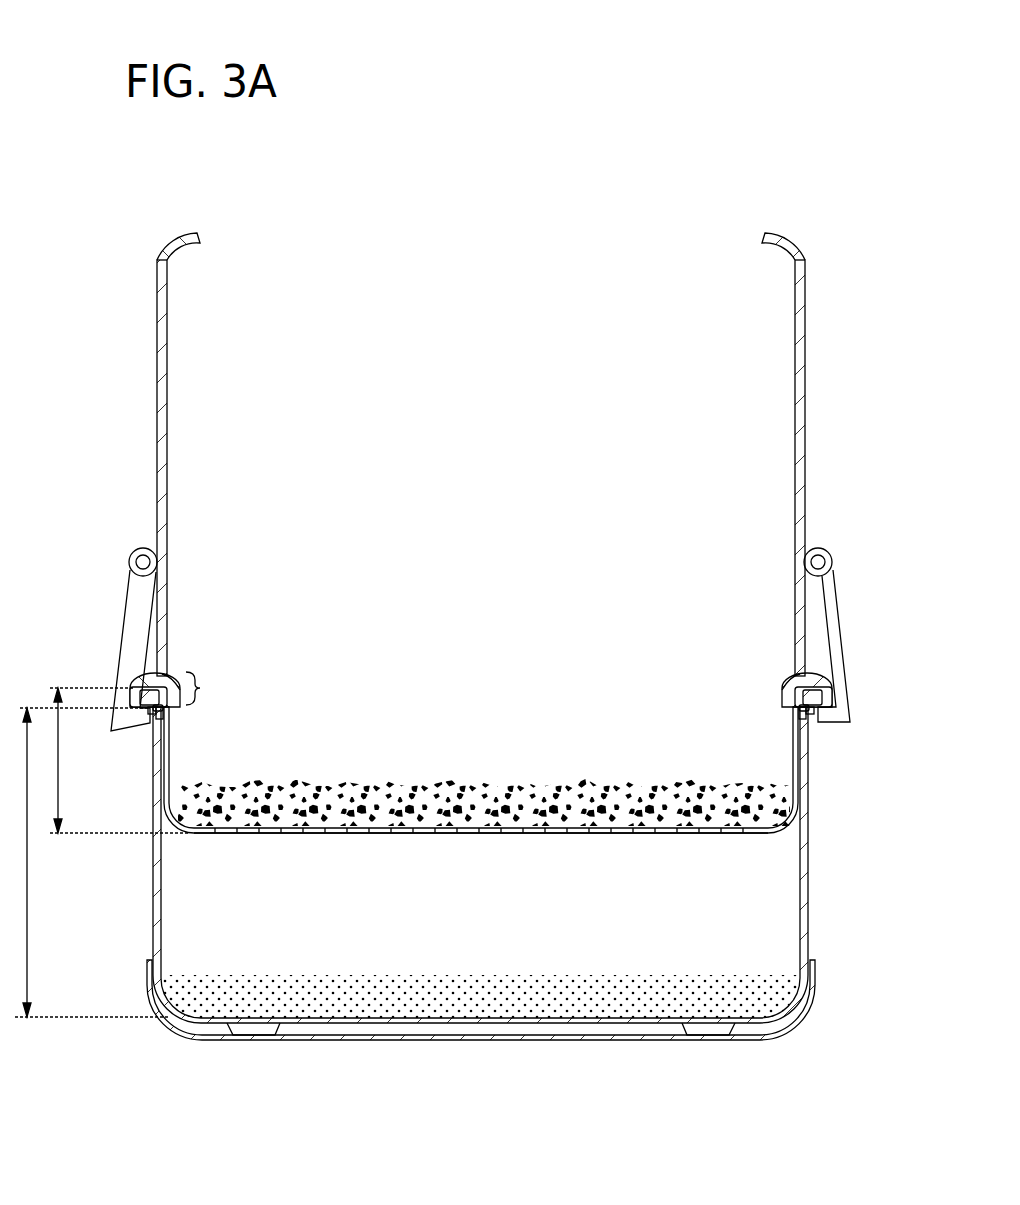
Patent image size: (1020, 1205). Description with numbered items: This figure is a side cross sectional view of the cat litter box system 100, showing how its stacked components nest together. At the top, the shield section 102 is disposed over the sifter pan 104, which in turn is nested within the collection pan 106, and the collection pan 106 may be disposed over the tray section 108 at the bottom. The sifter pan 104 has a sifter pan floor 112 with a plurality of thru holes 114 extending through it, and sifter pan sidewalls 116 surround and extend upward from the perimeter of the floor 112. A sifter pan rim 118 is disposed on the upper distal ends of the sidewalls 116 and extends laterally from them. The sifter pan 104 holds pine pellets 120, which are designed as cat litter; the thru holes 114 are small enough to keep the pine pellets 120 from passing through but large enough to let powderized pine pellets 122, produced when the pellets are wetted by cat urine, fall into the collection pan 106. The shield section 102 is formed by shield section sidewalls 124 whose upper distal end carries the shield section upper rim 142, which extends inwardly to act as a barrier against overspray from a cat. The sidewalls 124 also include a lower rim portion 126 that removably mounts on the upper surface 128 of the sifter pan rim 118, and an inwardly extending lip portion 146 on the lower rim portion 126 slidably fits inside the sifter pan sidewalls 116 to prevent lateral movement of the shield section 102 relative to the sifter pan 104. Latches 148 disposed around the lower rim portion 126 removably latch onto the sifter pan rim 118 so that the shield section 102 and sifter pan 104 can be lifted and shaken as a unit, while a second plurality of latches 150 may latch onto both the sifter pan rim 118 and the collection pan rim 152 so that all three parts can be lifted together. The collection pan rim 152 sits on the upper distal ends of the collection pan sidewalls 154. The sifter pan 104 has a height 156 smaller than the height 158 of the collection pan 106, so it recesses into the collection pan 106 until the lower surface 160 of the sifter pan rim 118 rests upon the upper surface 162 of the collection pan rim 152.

The cat litter box system 100 is at (525, 135).
The top shield section 102 is at (482, 429).
The sifter pan 104 is at (436, 799).
The collection pan 106 is at (481, 865).
The tray section 108 is at (813, 993).
The sifter pan floor 112 is at (232, 832).
The thru holes 114 is at (233, 834).
The sifter pan sidewalls 116 is at (793, 755).
The sifter pan rim 118 is at (813, 693).
The pine pellets 120 is at (540, 790).
The powderized pine pellets 122 is at (400, 978).
The shield section sidewalls 124 is at (807, 422).
The lower rim portion 126 is at (790, 680).
The upper surface of sifter pan rim 128 is at (815, 674).
The shield section upper rim 142 is at (762, 236).
The inwardly extending lip portion 146 is at (782, 690).
The latches 148 is at (850, 715).
The second plurality of latches 150 is at (130, 688).
The collection pan rim 152 is at (810, 716).
The collection pan sidewalls 154 is at (808, 902).
The height of sifter pan 156 is at (60, 768).
The height of collection pan 158 is at (28, 910).
The lower surface of sifter pan rim 160 is at (815, 712).
The upper surface of collection pan rim 162 is at (163, 706).